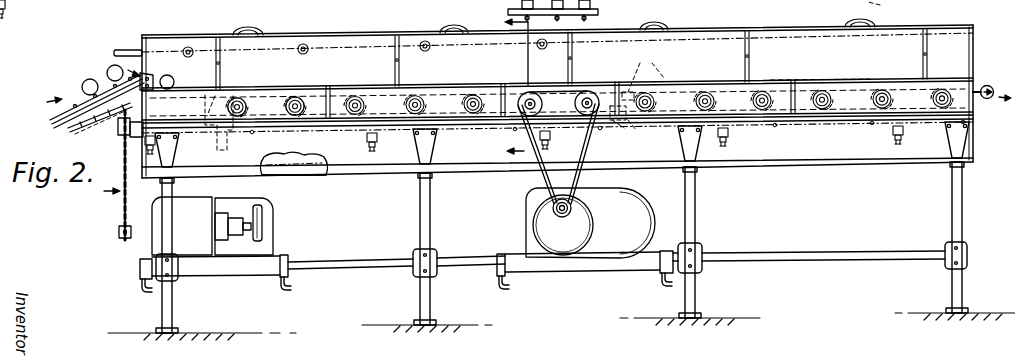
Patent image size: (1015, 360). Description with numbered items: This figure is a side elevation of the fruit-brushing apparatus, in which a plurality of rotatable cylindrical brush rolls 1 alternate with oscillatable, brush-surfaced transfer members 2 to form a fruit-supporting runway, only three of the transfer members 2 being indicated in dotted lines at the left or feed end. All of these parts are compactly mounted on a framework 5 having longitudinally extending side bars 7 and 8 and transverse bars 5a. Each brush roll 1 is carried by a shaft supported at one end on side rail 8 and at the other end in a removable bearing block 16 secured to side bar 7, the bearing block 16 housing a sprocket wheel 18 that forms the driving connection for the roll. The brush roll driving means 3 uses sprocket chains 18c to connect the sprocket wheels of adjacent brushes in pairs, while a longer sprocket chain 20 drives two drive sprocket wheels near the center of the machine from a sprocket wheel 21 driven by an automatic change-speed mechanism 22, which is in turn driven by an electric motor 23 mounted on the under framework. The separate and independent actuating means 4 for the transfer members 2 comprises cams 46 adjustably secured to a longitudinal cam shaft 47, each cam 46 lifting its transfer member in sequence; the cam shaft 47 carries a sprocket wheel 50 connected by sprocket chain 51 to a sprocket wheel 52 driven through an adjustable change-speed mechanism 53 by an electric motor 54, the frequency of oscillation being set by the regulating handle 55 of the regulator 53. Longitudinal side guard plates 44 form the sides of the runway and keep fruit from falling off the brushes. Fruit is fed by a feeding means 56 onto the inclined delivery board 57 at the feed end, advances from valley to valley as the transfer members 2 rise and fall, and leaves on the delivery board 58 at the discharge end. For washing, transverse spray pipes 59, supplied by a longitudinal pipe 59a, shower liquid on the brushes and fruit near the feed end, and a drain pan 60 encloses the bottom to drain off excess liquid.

The brush roll 1 is at (240, 97).
The transfer member 2 is at (292, 96).
The brush roll driving means 3 is at (534, 190).
The transfer member actuating means 4 is at (310, 107).
The framework 5 is at (700, 285).
The transverse bar 5a is at (378, 148).
The side bar 7 is at (97, 137).
The side bar 8 is at (293, 157).
The bearing block 16 is at (305, 89).
The sprocket wheel 18 is at (558, 103).
The sprocket chain 18c is at (767, 50).
The sprocket chain 20 is at (572, 13).
The sprocket wheel 21 is at (563, 221).
The change-speed mechanism 22 is at (533, 221).
The electric motor 23 is at (642, 196).
The side guard plate 44 is at (803, 67).
The cam 46 is at (222, 150).
The cam shaft 47 is at (117, 116).
The sprocket wheel 50 is at (108, 123).
The sprocket chain 51 is at (123, 203).
The sprocket wheel 52 is at (125, 239).
The change-speed mechanism 53 is at (196, 200).
The electric motor 54 is at (268, 201).
The regulating handle 55 is at (266, 222).
The feeding means 56 is at (72, 101).
The delivery board 57 is at (168, 75).
The delivery board 58 is at (990, 100).
The spray pipe 59 is at (190, 57).
The pipe 59a is at (122, 49).
The drain pan 60 is at (326, 176).